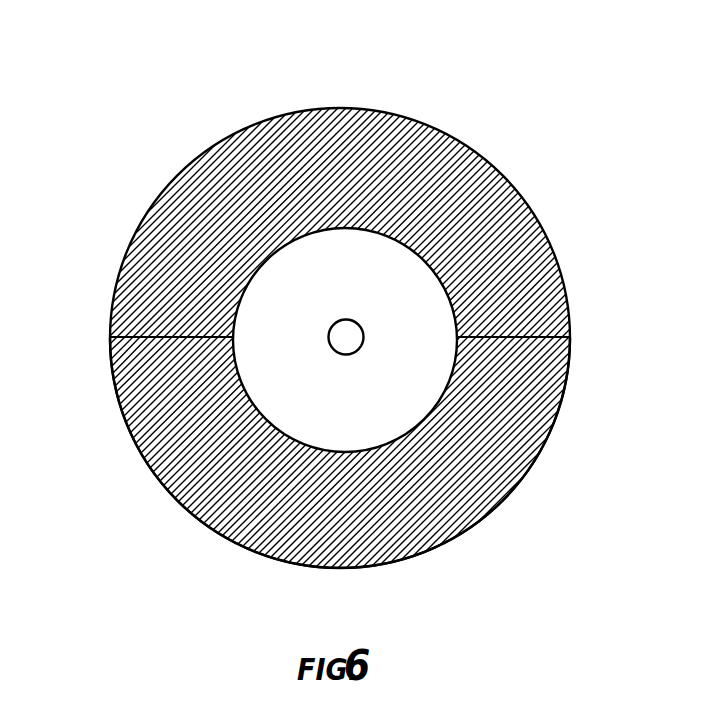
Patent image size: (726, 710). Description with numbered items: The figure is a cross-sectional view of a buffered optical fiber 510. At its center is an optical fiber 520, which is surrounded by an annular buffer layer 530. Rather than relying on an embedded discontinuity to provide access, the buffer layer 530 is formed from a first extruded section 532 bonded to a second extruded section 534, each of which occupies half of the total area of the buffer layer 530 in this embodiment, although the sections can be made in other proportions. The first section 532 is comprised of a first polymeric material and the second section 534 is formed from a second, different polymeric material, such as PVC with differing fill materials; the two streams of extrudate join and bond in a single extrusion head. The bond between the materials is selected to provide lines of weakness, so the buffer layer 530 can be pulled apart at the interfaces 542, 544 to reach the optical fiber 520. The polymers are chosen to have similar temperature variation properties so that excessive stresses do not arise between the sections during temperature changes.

The buffered optical fiber 510 is at (165, 125).
The optical fiber 520 is at (178, 415).
The buffer layer 530 is at (277, 550).
The first extruded section 532 is at (498, 185).
The second extruded section 534 is at (492, 482).
The interface 542 is at (137, 338).
The interface 544 is at (535, 337).